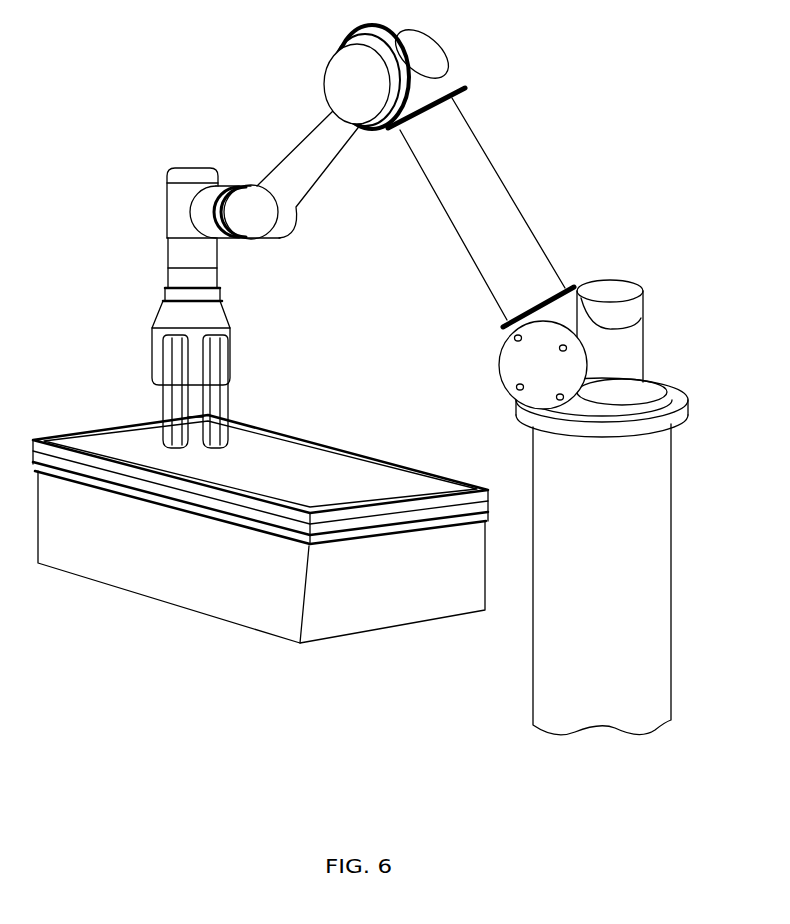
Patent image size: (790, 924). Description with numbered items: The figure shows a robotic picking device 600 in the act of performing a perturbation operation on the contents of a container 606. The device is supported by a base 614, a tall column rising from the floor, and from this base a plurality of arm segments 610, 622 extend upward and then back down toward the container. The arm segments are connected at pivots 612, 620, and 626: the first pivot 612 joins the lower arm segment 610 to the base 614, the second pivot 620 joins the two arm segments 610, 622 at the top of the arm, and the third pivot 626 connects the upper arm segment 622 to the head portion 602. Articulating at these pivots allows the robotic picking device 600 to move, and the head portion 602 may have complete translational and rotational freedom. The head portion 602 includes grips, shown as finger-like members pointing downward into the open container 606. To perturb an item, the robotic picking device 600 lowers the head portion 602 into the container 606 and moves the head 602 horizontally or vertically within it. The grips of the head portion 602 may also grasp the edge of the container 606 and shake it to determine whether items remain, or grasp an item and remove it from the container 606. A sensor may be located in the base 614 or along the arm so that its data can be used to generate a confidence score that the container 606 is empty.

The robotic picking device 600 is at (546, 73).
The head portion 602 is at (208, 326).
The container 606 is at (297, 433).
The arm segment 610 is at (519, 246).
The pivot 612 is at (593, 358).
The base 614 is at (647, 511).
The pivot 620 is at (397, 23).
The arm segment 622 is at (333, 160).
The pivot 626 is at (254, 200).